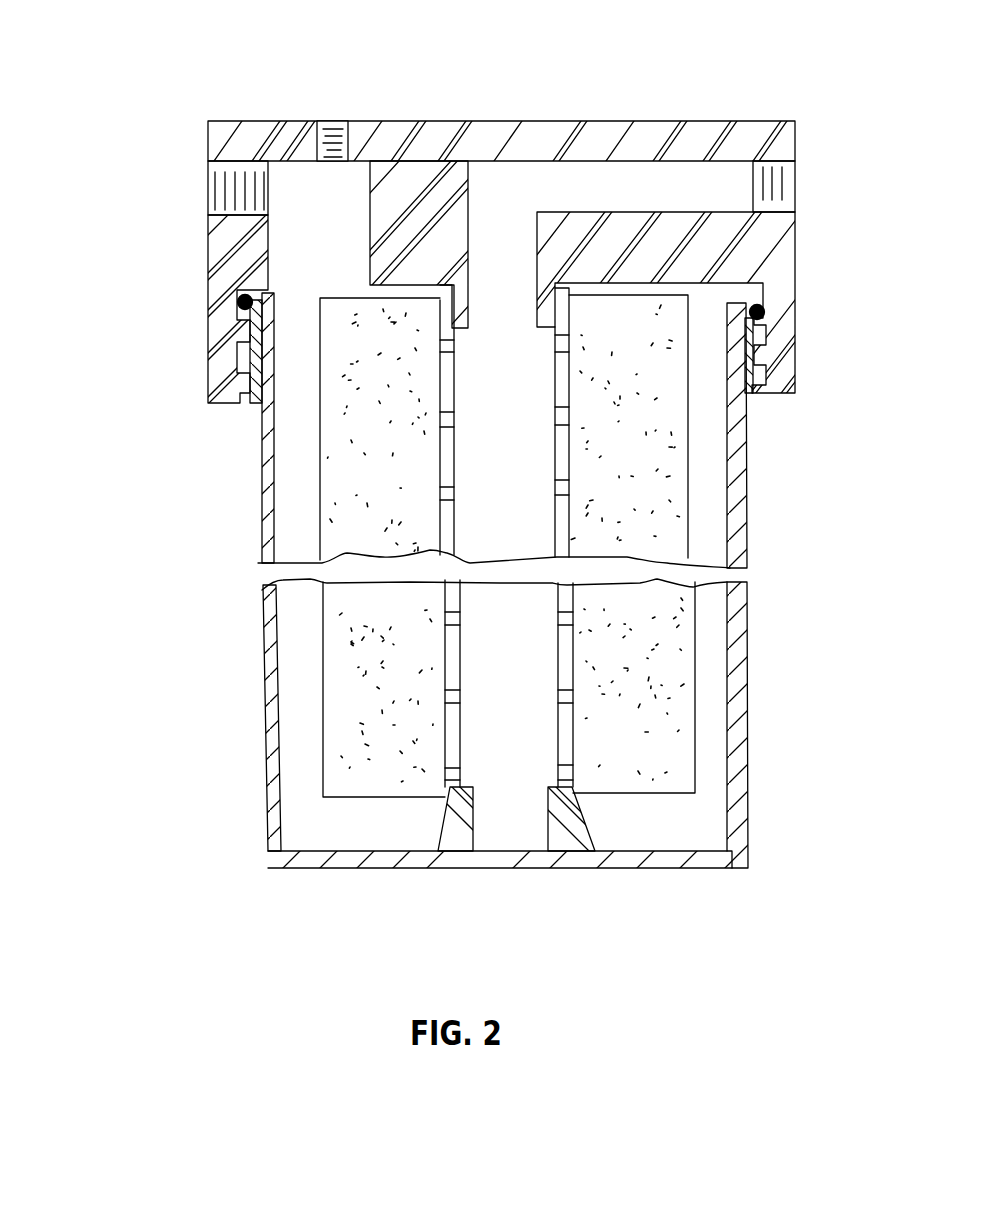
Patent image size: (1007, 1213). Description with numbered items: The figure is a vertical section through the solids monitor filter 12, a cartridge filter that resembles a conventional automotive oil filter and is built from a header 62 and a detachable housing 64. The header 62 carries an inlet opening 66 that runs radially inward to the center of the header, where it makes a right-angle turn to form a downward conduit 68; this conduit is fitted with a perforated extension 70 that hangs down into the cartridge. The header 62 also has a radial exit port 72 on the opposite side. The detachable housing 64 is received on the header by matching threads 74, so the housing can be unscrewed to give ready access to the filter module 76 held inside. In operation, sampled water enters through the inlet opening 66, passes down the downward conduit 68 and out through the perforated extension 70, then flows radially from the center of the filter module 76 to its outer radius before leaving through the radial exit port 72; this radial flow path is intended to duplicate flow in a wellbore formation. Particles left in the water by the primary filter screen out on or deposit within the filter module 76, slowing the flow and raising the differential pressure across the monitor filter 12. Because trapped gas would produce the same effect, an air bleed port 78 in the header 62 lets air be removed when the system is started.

The solids monitor filter 12 is at (157, 400).
The header 62 is at (797, 377).
The detachable housing 64 is at (745, 535).
The inlet opening 66 is at (797, 196).
The downward conduit 68 is at (411, 258).
The perforated extension 70 is at (555, 463).
The radial exit port 72 is at (208, 195).
The matching threads 74 is at (252, 405).
The filter module 76 is at (323, 750).
The air bleed port 78 is at (332, 120).